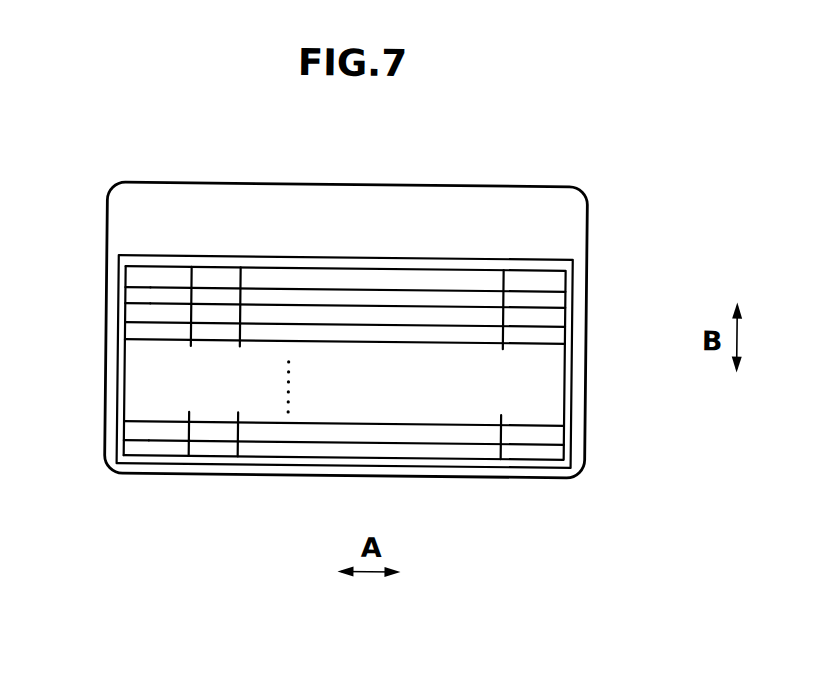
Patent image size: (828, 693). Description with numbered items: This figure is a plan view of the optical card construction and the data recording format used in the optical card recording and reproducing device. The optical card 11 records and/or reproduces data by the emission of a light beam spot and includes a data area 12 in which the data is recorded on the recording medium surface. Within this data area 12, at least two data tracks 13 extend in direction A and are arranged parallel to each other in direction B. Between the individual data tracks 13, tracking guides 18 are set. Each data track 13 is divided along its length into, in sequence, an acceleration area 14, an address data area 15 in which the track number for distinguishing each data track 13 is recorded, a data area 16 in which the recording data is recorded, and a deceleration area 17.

The optical card 11 is at (543, 155).
The data area 12 is at (562, 248).
The data track 13 is at (572, 275).
The acceleration area 14 is at (145, 271).
The address data area 15 is at (217, 271).
The data area 16 is at (333, 270).
The deceleration area 17 is at (512, 294).
The tracking guide 18 is at (137, 293).